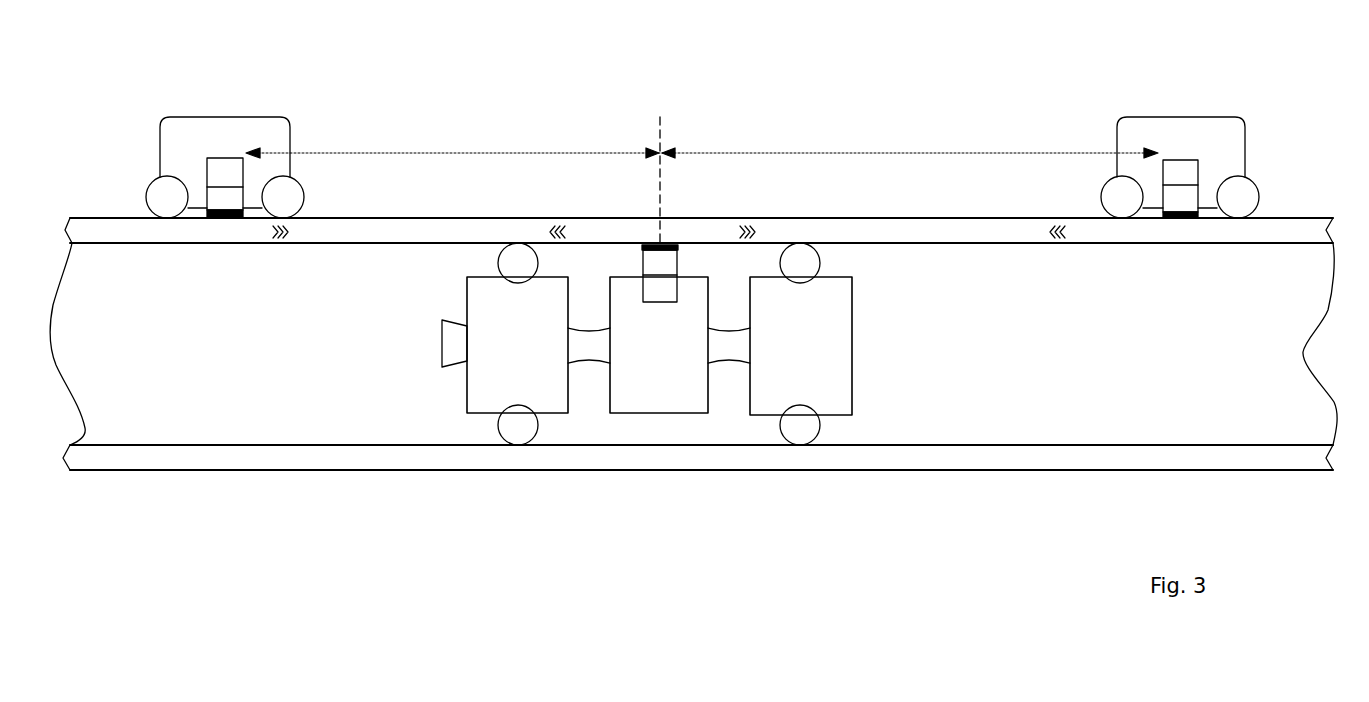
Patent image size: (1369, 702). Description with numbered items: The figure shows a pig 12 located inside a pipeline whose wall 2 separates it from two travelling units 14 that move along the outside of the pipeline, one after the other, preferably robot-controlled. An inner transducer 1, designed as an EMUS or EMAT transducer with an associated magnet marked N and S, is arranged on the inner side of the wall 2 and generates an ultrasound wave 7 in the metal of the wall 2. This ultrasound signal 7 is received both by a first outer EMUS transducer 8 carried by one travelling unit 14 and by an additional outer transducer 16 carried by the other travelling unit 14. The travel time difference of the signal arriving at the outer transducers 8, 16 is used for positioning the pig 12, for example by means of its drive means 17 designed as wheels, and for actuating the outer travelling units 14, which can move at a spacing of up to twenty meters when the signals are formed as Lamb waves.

The inner transducer 1 is at (678, 247).
The wall 2 is at (1305, 238).
The ultrasound wave 7 is at (560, 232).
The outer EMUS transducer 8 is at (222, 218).
The pig 12 is at (637, 427).
The travelling unit 14 is at (183, 137).
The additional outer transducer 16 is at (1185, 218).
The drive means 17 is at (510, 264).